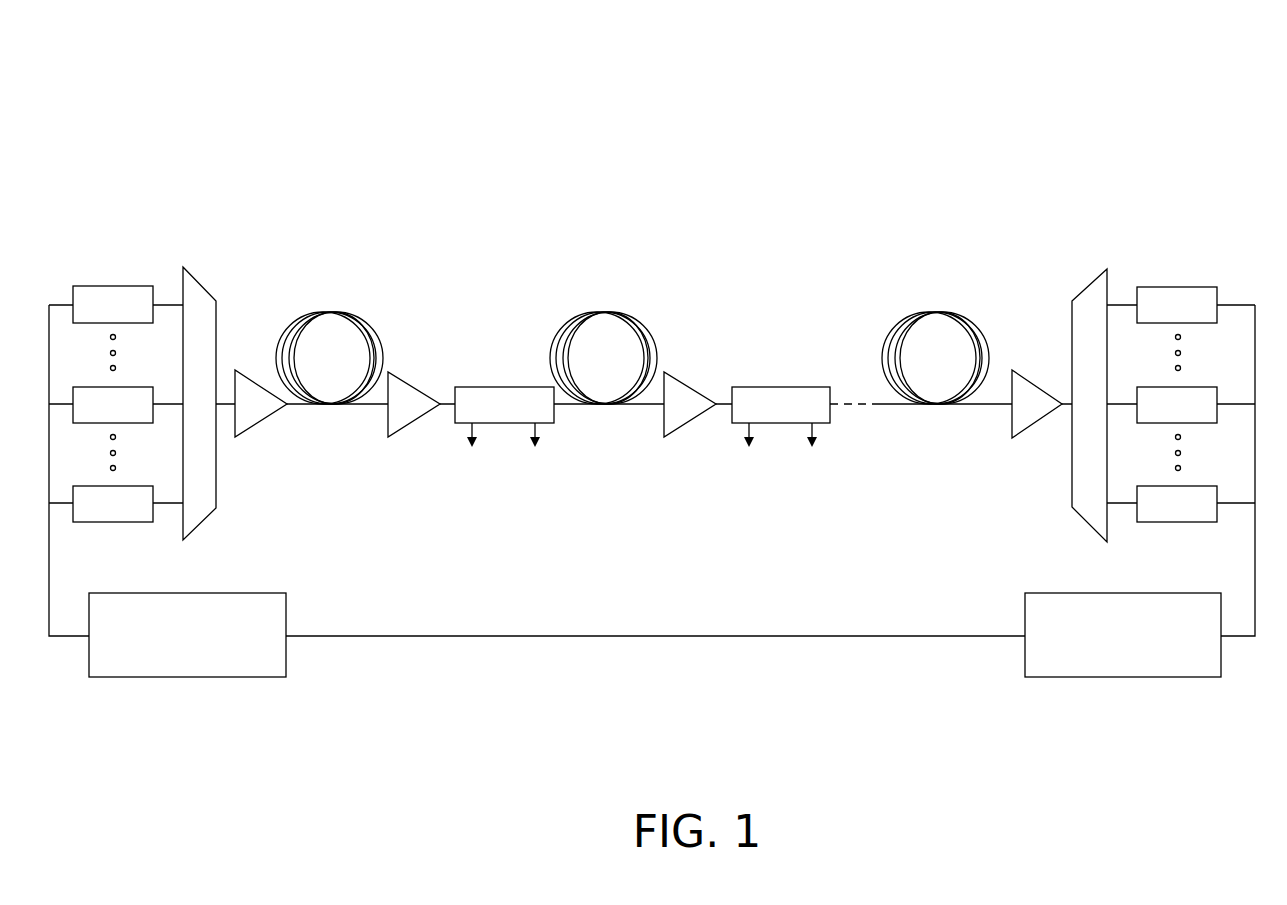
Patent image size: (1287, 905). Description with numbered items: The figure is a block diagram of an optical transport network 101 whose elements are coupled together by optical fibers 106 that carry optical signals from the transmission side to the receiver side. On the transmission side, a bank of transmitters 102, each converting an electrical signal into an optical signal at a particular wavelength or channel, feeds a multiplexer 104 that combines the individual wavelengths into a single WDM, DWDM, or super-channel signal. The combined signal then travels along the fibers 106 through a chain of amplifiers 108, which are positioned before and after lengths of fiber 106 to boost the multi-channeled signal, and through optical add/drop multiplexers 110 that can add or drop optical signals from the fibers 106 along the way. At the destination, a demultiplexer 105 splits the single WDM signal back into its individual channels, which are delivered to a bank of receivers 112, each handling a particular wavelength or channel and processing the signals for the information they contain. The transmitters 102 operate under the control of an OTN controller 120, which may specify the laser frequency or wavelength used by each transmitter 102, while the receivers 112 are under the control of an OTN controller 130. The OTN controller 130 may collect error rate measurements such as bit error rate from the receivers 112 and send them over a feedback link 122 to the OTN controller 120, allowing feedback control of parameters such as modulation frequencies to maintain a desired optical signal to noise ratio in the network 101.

The optical transport network 101 is at (157, 48).
The transmitter 102 is at (97, 286).
The multiplexer 104 is at (196, 273).
The demultiplexer 105 is at (1086, 281).
The optical fiber 106 is at (324, 312).
The amplifier 108 is at (258, 424).
The optical add/drop multiplexer 110 is at (490, 387).
The receiver 112 is at (1190, 286).
The OTN controller 120 is at (187, 635).
The feedback link 122 is at (638, 636).
The OTN controller 130 is at (1123, 635).